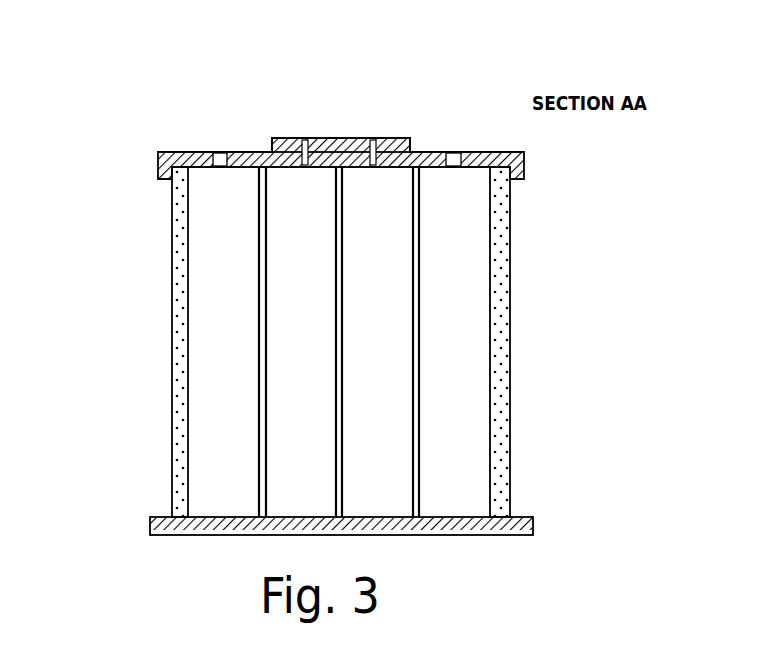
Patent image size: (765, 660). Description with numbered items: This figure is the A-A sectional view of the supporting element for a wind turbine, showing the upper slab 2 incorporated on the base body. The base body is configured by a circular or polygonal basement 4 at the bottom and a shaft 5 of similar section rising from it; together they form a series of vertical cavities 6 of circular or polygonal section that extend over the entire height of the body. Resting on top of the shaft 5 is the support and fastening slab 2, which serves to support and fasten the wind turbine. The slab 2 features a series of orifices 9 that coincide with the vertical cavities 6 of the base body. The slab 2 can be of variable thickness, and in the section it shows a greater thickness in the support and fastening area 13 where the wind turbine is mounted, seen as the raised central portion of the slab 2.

The slab 2 is at (157, 151).
The orifices 9 is at (217, 151).
The support and fastening area 13 is at (330, 139).
The shaft 5 is at (178, 288).
The vertical cavities 6 is at (305, 417).
The basement 4 is at (153, 518).